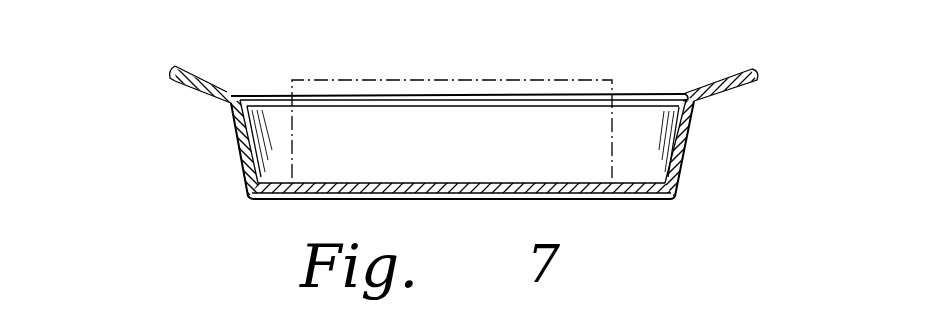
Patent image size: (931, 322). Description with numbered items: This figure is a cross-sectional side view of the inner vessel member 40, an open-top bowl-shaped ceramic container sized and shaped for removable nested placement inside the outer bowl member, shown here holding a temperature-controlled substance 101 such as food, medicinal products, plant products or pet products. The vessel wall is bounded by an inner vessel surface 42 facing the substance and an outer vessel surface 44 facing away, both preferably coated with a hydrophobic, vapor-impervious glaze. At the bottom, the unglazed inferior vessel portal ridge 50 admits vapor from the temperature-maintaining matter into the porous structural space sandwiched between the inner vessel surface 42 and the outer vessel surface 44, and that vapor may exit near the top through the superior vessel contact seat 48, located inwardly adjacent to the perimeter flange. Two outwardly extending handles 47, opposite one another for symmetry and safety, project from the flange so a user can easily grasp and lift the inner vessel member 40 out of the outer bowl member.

The inner vessel member 40 is at (683, 157).
The inner vessel surface 42 is at (280, 117).
The outer vessel surface 44 is at (234, 139).
The outwardly extending handle 47 is at (170, 72).
The superior vessel contact seat 48 is at (683, 96).
The inferior vessel portal ridge 50 is at (250, 199).
The temperature-controlled substance 101 is at (440, 80).